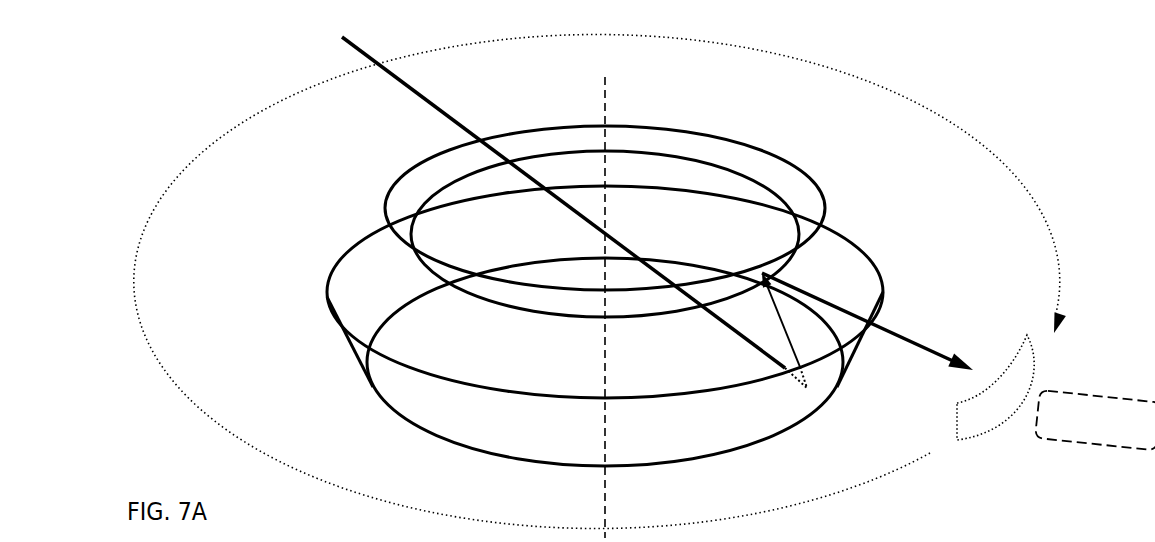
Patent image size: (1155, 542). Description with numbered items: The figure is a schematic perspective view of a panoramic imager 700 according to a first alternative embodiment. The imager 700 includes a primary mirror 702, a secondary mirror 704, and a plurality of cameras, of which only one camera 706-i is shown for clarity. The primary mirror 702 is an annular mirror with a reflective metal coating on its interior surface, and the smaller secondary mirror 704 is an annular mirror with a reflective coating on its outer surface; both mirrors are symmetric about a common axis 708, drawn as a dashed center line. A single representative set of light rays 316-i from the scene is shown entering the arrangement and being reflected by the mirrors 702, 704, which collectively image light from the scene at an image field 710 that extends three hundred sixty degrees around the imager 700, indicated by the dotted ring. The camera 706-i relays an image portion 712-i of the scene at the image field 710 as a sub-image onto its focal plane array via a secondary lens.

The imager 700 is at (242, 76).
The primary mirror 702 is at (326, 298).
The secondary mirror 704 is at (387, 202).
The axis 708 is at (605, 98).
The image field 710 is at (1030, 193).
The light rays 316-i is at (420, 94).
The image portion 712-i is at (957, 422).
The camera 706-i is at (1080, 446).